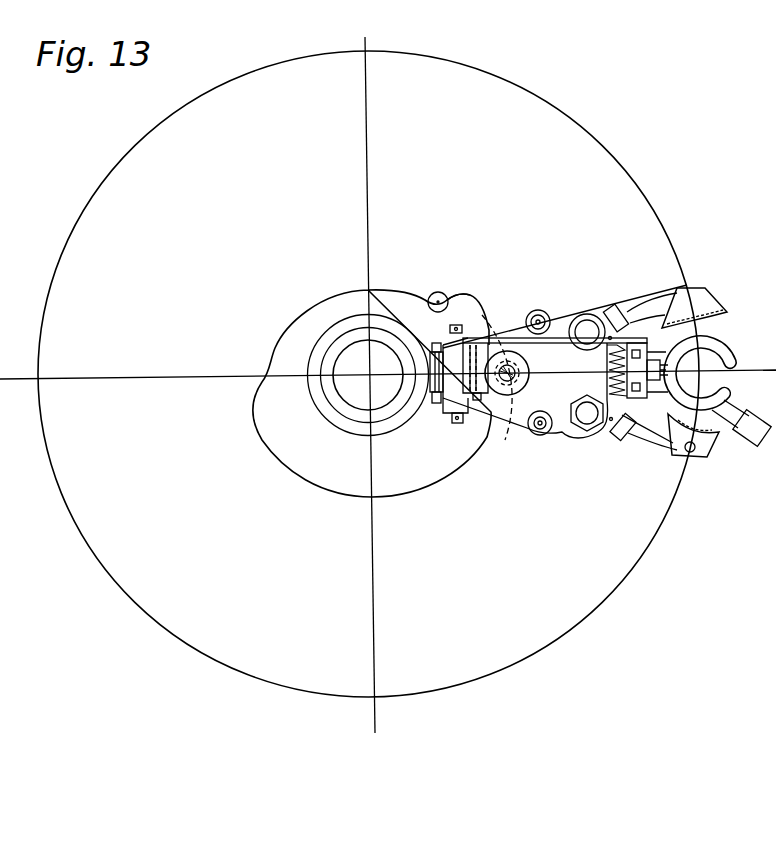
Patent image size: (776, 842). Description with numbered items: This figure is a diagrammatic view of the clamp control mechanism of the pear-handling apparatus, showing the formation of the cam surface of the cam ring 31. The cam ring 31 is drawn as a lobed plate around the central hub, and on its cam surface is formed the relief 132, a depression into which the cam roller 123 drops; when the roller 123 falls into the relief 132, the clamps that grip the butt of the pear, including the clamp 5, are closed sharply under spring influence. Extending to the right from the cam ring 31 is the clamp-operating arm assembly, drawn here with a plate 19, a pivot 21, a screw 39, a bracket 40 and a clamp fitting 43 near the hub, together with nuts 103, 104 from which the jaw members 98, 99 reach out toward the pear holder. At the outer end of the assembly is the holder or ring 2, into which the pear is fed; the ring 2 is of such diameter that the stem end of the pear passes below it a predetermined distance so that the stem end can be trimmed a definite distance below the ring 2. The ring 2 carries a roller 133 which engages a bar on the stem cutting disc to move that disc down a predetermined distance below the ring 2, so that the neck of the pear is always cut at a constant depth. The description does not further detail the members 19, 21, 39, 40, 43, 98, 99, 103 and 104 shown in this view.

The ring 2 is at (714, 336).
The clamp 5 is at (717, 284).
The plate 19 is at (556, 338).
The pivot pin 21 is at (508, 396).
The cam ring 31 is at (465, 437).
The screw 39 is at (550, 301).
The bracket 40 is at (456, 424).
The clamp 43 is at (436, 405).
The upper jaw 98 is at (717, 302).
The lower jaw 99 is at (712, 452).
The nut 103 is at (591, 420).
The nut 104 is at (588, 330).
The cam roller 123 is at (433, 295).
The relief 132 is at (455, 300).
The roller 133 is at (751, 437).